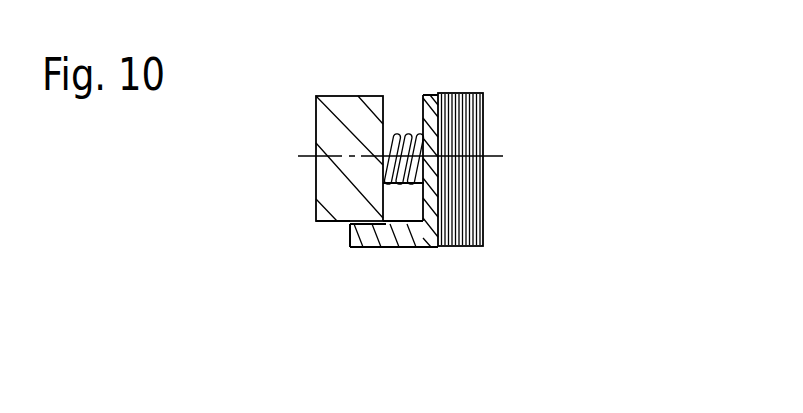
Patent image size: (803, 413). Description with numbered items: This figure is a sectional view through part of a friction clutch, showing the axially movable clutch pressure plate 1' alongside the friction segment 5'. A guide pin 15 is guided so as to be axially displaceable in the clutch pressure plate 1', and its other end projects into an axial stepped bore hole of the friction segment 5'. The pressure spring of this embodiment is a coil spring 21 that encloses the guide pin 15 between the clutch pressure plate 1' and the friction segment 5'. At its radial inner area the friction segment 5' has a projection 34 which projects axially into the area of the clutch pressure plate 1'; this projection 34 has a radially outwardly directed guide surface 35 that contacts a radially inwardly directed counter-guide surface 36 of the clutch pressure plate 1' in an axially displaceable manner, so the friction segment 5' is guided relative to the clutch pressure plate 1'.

The clutch pressure plate 1' is at (324, 159).
The friction segment 5' is at (505, 169).
The guide pins 15 is at (396, 186).
The coil springs 21 is at (410, 184).
The projection 34 is at (410, 237).
The guide surface 35 is at (360, 225).
The counter-guide surface 36 is at (333, 223).